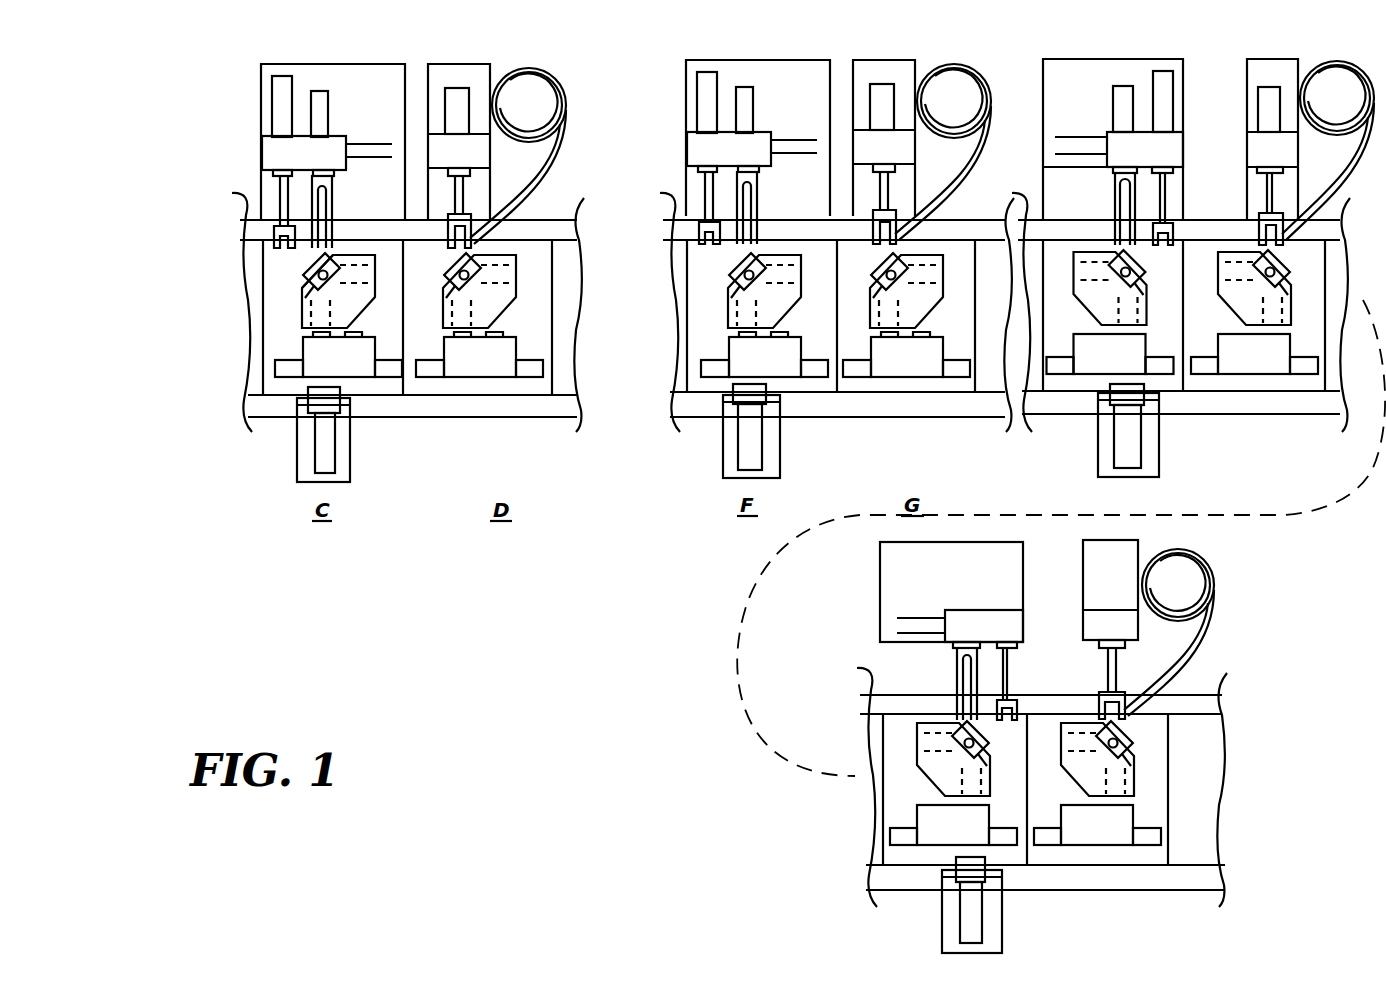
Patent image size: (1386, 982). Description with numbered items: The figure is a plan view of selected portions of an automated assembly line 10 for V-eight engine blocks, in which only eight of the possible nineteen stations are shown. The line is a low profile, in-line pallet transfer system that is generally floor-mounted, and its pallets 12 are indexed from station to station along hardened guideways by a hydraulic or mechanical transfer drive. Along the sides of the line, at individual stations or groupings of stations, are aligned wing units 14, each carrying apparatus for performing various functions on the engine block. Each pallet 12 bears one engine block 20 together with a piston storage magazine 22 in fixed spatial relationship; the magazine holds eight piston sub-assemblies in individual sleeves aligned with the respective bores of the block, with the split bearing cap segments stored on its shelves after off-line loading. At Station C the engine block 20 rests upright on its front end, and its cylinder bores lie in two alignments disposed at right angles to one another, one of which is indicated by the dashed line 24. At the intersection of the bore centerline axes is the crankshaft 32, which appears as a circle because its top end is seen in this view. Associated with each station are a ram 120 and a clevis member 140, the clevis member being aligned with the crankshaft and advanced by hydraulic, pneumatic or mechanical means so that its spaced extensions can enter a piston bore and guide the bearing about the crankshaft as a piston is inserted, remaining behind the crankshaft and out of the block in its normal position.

The automated assembly line 10 is at (512, 466).
The pallet 12 is at (535, 318).
The wing unit 14 is at (722, 434).
The engine block 20 is at (298, 306).
The piston storage magazine 22 is at (310, 345).
The dashed line 24 is at (310, 284).
The crankshaft 32 is at (452, 282).
The ram 120 is at (320, 448).
The clevis member 140 is at (280, 192).